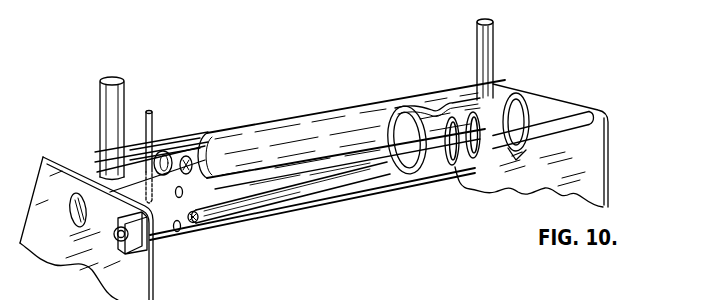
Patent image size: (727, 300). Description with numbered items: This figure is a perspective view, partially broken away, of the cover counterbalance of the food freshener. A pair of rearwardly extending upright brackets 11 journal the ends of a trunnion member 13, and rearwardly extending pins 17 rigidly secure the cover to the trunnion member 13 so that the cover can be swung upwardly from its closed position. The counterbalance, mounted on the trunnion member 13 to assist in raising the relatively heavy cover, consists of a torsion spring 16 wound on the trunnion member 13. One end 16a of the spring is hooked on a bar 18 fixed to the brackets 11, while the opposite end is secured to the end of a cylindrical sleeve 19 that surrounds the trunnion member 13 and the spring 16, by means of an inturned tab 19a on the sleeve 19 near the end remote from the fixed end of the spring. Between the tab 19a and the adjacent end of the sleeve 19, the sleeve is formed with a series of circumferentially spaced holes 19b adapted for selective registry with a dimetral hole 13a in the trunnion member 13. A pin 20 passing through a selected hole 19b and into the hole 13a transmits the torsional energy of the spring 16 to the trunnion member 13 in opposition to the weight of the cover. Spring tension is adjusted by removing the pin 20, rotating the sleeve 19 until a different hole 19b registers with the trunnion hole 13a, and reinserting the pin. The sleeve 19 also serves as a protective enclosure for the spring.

The upright brackets 11 is at (40, 172).
The trunnion member 13 is at (520, 106).
The dimetral hole 13a is at (97, 170).
The torsion spring 16 is at (422, 172).
The end of torsion spring 16a is at (522, 158).
The pins 17 is at (100, 94).
The bar 18 is at (584, 134).
The cylindrical sleeve 19 is at (306, 113).
The inturned tab 19a is at (208, 140).
The holes 19b is at (184, 191).
The pin 20 is at (147, 110).